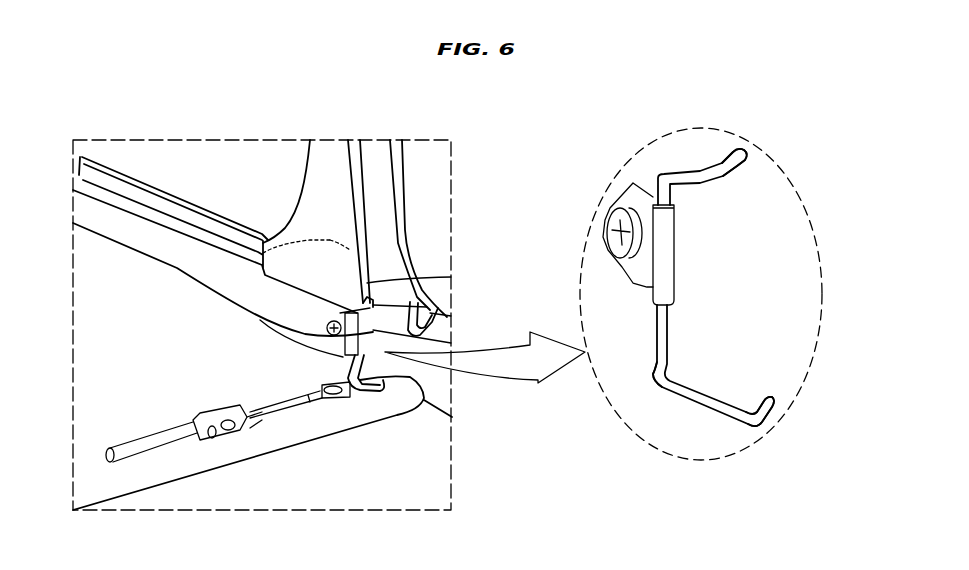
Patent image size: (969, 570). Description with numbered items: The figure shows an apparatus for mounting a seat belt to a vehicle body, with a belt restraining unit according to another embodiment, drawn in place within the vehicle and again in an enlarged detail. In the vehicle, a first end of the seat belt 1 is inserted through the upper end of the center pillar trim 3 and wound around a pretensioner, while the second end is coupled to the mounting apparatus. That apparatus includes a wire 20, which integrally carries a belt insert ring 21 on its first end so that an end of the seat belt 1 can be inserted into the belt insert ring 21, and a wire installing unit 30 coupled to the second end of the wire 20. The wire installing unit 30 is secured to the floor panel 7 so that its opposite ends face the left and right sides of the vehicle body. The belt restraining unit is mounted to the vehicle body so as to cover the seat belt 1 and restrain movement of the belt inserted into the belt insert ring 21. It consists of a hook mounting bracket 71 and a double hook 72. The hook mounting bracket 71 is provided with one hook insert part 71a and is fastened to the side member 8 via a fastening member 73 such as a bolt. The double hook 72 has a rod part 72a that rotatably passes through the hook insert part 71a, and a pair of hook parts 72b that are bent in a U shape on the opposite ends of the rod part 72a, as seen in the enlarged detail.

The seat belt 1 is at (360, 165).
The center pillar trim 3 is at (318, 162).
The floor panel 7 is at (200, 460).
The side member 8 is at (143, 213).
The wire 20 is at (282, 412).
The belt insert ring 21 is at (338, 398).
The wire installing unit 30 is at (158, 447).
The hook mounting bracket 71 is at (340, 312).
The hook insert part 71a is at (670, 255).
The double hook 72 is at (380, 297).
The rod part 72a is at (617, 390).
The hook parts 72b is at (700, 173).
The fastening member 73 is at (326, 328).